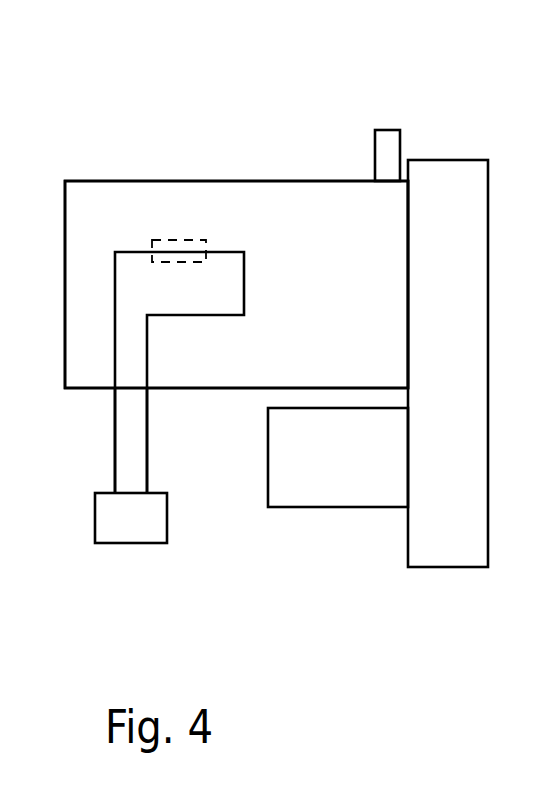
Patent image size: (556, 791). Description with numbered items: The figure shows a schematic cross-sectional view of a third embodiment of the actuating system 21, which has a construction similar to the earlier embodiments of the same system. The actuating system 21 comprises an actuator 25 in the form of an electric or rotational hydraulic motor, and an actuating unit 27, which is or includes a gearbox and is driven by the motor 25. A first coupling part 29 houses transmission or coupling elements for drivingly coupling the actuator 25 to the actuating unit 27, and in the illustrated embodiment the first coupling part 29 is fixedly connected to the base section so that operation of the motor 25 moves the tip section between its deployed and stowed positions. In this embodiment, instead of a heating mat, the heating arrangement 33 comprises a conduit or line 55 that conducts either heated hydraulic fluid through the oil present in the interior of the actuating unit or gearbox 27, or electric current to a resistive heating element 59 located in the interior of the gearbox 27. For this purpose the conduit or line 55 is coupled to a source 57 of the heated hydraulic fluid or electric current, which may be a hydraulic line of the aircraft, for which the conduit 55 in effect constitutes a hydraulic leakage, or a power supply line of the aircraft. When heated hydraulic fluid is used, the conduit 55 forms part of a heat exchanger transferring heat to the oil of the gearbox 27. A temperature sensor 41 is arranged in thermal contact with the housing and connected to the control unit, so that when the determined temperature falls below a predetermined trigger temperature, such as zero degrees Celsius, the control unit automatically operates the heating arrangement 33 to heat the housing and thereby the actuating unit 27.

The actuating system 21 is at (336, 122).
The actuating unit 27 is at (245, 200).
The temperature sensor 41 is at (388, 142).
The first coupling part 29 is at (448, 182).
The actuator 25 is at (362, 492).
The heating arrangement 33 is at (168, 431).
The conduit or line 55 is at (113, 462).
The source 57 is at (107, 523).
The resistive heating element 59 is at (175, 242).